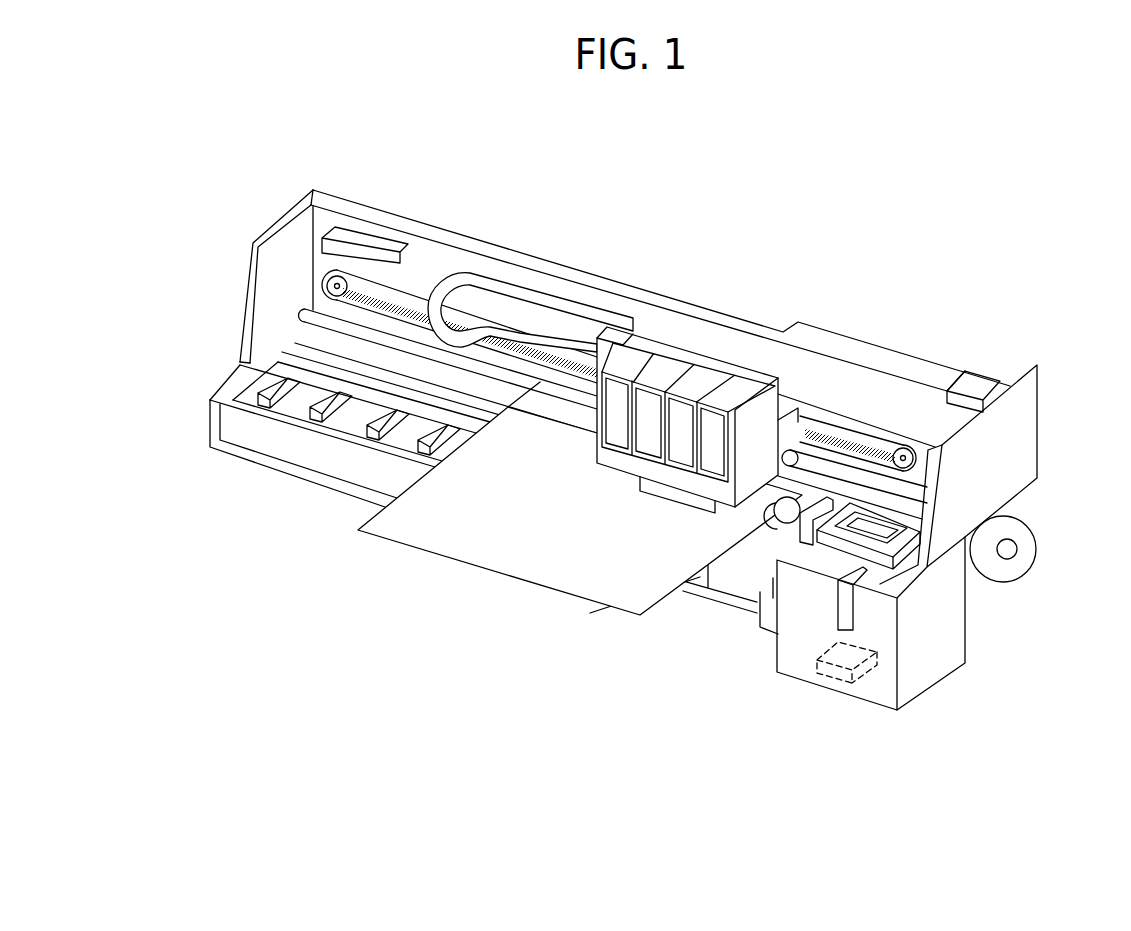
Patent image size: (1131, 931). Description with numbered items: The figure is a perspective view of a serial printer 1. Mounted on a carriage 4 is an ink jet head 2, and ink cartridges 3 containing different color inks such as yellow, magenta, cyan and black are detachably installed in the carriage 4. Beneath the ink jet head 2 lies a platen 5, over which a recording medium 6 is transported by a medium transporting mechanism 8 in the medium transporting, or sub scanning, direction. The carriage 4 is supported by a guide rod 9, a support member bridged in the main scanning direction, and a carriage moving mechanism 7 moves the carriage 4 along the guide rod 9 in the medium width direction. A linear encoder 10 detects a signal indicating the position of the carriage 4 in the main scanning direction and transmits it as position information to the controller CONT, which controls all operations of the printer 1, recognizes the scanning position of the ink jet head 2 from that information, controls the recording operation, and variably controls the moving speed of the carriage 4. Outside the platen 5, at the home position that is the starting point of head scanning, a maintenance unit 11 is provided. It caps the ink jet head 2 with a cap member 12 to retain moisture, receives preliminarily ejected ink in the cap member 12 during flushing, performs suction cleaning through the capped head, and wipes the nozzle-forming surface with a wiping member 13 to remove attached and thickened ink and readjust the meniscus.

The printer 1 is at (527, 254).
The ink jet head 2 is at (673, 490).
The ink cartridges 3 is at (698, 370).
The carriage 4 is at (773, 392).
The platen 5 is at (300, 403).
The recording medium 6 is at (452, 543).
The carriage moving mechanism 7 is at (900, 412).
The medium transporting mechanism 8 is at (985, 603).
The guide rod 9 is at (305, 312).
The linear encoder 10 is at (357, 238).
The maintenance unit 11 is at (893, 562).
The cap member 12 is at (845, 530).
The wiping member 13 is at (792, 530).
The controller CONT is at (830, 684).